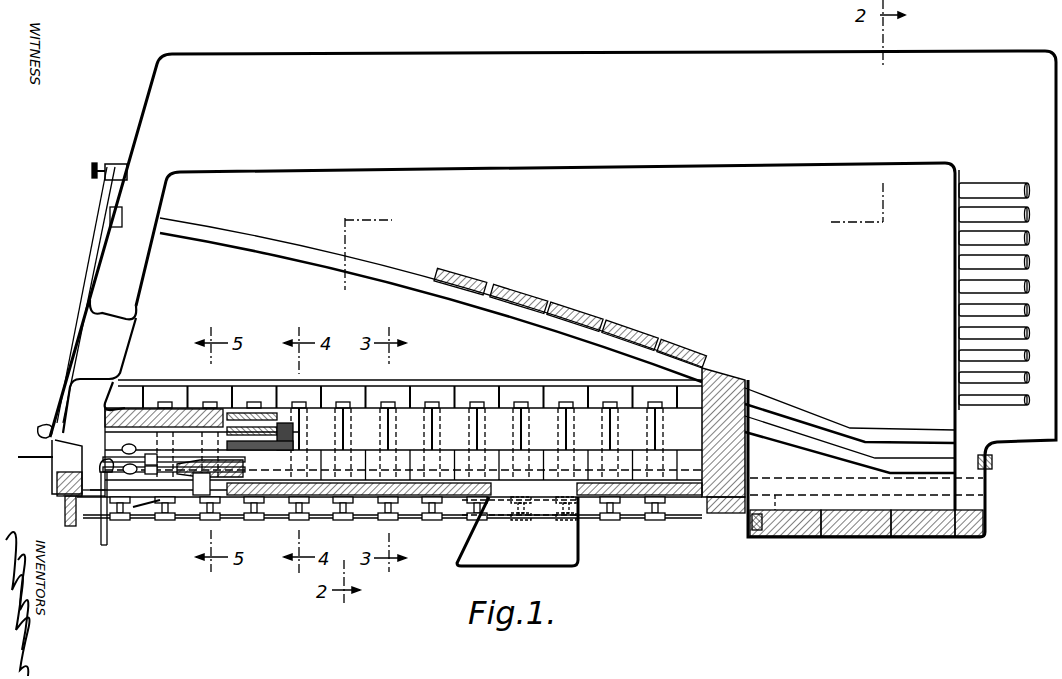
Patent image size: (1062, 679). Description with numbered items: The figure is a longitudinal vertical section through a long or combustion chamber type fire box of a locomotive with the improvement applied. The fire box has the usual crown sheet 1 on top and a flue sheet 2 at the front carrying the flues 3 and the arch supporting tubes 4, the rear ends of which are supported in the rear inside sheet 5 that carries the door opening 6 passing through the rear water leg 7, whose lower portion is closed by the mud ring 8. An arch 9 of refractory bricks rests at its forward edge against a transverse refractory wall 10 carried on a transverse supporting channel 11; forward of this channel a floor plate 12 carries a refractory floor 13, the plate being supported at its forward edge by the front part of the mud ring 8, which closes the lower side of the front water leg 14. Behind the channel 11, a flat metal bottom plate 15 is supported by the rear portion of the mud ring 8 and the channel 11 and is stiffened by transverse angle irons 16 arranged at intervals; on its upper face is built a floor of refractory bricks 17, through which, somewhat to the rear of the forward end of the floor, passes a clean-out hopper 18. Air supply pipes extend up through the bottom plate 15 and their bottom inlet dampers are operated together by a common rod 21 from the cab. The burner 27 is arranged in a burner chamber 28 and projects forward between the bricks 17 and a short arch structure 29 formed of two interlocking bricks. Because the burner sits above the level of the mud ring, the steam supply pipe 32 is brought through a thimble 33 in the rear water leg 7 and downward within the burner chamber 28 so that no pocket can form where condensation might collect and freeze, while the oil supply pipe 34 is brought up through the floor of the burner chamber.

The crown sheet 1 is at (519, 171).
The flue sheet 2 is at (952, 298).
The flues 3 is at (985, 188).
The arch supporting tubes 4 is at (904, 437).
The rear inside sheet 5 is at (168, 207).
The door opening 6 is at (553, 294).
The rear water leg 7 is at (113, 290).
The mud ring 8 is at (66, 482).
The arch 9 is at (628, 330).
The transverse refractory wall 10 is at (732, 370).
The transverse supporting channel 11 is at (724, 515).
The floor plate 12 is at (795, 538).
The refractory floor 13 is at (855, 540).
The front water leg 14 is at (970, 487).
The bottom plate 15 is at (96, 500).
The transverse angle irons 16 is at (244, 500).
The refractory bricks 17 is at (292, 499).
The clean-out hopper 18 is at (517, 531).
The common rod 21 is at (310, 519).
The burner 27 is at (236, 480).
The burner chamber 28 is at (174, 456).
The short arch structure 29 is at (236, 409).
The steam supply pipe 32 is at (66, 352).
The thimble 33 is at (52, 455).
The oil supply pipe 34 is at (108, 535).